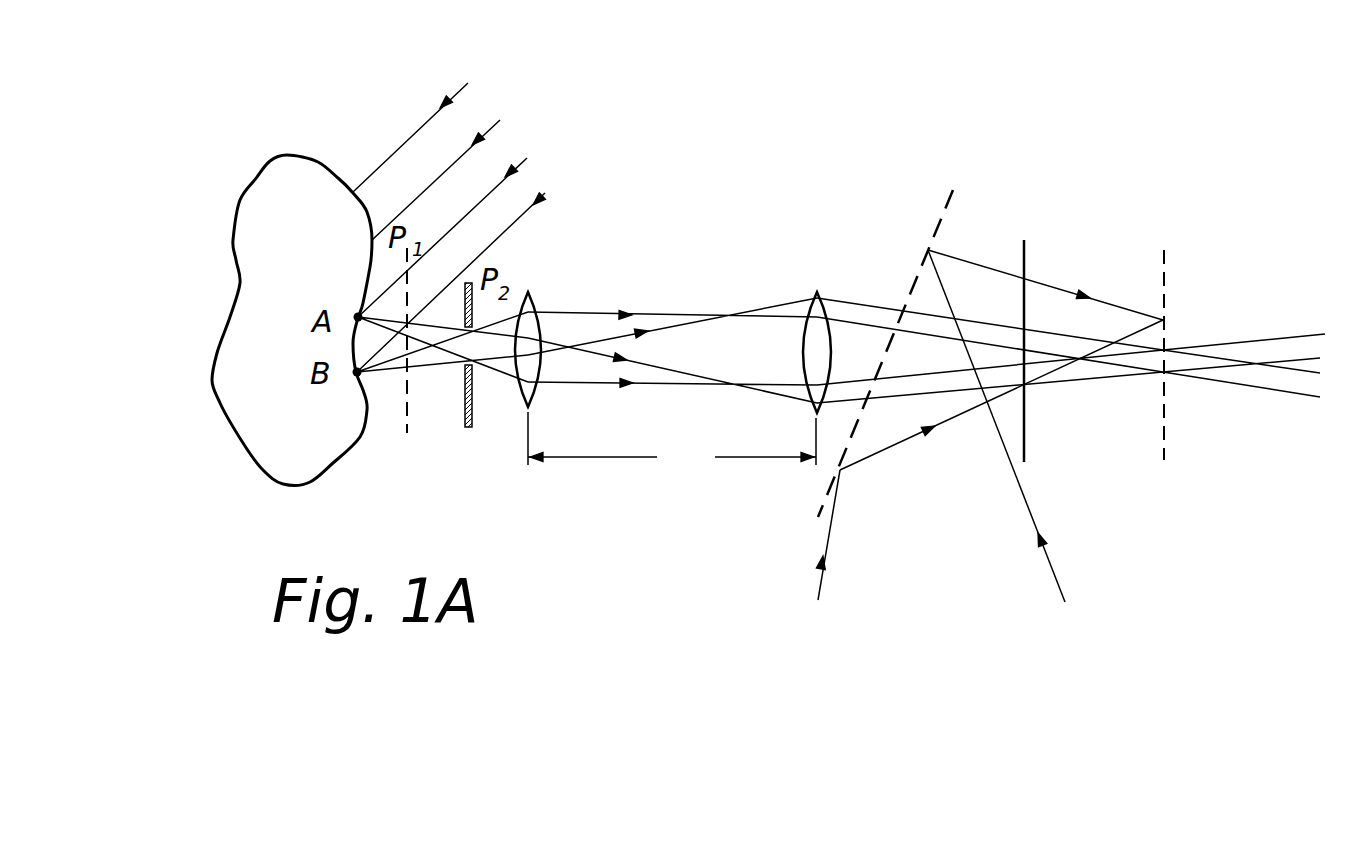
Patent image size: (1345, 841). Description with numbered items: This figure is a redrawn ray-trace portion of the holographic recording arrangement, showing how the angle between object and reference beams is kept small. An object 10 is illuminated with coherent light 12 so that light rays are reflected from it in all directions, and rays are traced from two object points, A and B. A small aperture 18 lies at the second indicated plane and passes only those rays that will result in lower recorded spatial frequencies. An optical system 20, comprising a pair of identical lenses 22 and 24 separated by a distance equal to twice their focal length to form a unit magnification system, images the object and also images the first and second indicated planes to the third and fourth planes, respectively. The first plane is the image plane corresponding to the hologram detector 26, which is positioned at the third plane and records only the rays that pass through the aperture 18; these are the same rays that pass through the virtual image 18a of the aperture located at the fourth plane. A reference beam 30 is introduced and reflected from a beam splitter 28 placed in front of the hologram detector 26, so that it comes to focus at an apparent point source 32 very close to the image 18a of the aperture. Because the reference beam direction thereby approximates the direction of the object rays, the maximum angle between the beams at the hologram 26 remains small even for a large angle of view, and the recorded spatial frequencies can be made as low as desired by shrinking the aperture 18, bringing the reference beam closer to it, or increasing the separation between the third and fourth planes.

The object 10 is at (235, 260).
The beam of coherent radiation 12 is at (378, 172).
The aperture 18 is at (460, 367).
The image of the aperture 18a is at (1182, 365).
The optical system 20 is at (740, 272).
The lens 22 is at (530, 296).
The lens 24 is at (818, 294).
The hologram detector 26 is at (1030, 252).
The beam splitter 28 is at (952, 195).
The reference beam 30 is at (1017, 488).
The apparent point source 32 is at (1168, 318).